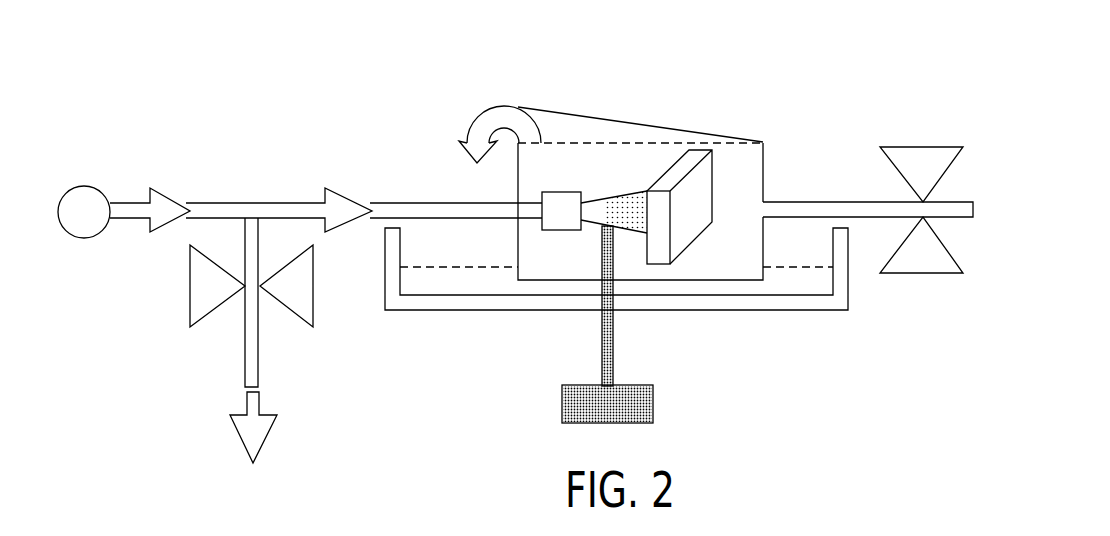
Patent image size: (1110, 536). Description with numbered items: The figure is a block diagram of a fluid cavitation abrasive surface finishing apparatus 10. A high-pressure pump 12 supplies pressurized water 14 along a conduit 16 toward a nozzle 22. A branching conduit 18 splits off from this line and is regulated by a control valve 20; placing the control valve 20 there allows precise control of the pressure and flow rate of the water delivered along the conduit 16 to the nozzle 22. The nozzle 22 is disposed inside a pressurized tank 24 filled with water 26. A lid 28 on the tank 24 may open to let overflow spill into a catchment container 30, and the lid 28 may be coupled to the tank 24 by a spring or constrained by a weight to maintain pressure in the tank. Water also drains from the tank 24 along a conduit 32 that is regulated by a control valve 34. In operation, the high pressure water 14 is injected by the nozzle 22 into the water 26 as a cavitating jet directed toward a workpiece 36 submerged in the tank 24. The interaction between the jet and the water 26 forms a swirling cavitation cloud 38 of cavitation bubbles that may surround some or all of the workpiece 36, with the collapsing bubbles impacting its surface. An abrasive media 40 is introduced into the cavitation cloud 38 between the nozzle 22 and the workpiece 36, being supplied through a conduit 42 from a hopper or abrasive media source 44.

The fluid cavitation abrasive surface finishing apparatus 10 is at (354, 89).
The high-pressure pump 12 is at (80, 238).
The pressurized water 14 is at (233, 210).
The conduit 16 is at (273, 202).
The branching conduit 18 is at (258, 360).
The control valve 20 is at (188, 289).
The nozzle 22 is at (542, 200).
The pressurized tank 24 is at (765, 158).
The water 26 is at (587, 180).
The lid 28 is at (560, 112).
The catchment container 30 is at (813, 310).
The conduit 32 is at (843, 200).
The control valve 34 is at (927, 145).
The workpiece 36 is at (692, 155).
The cavitation cloud 38 is at (597, 208).
The abrasive media 40 is at (632, 408).
The conduit 42 is at (615, 350).
The abrasive media source 44 is at (563, 398).